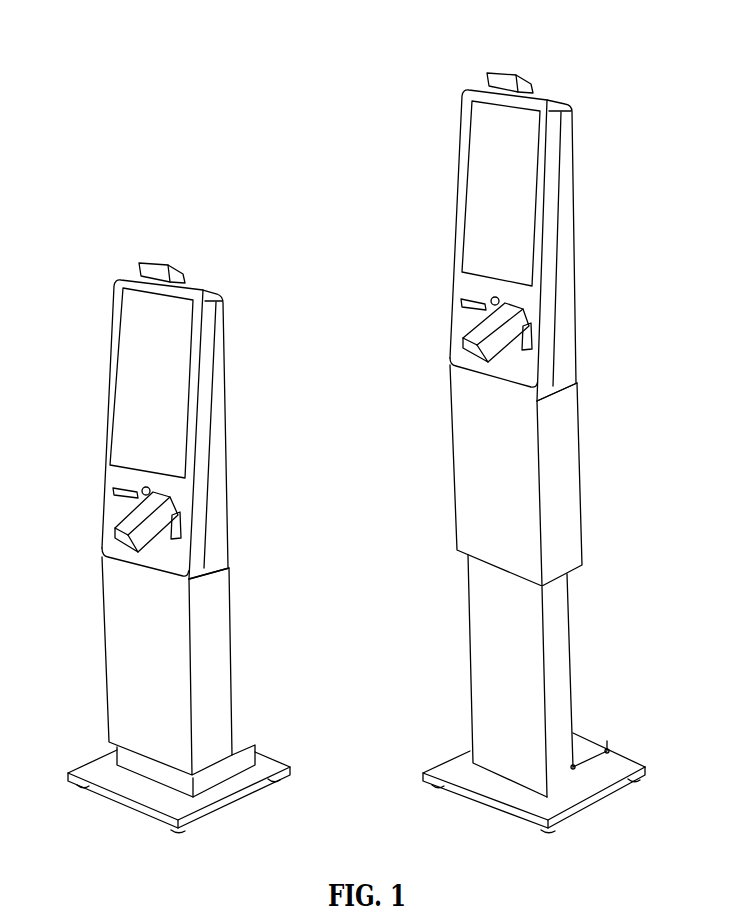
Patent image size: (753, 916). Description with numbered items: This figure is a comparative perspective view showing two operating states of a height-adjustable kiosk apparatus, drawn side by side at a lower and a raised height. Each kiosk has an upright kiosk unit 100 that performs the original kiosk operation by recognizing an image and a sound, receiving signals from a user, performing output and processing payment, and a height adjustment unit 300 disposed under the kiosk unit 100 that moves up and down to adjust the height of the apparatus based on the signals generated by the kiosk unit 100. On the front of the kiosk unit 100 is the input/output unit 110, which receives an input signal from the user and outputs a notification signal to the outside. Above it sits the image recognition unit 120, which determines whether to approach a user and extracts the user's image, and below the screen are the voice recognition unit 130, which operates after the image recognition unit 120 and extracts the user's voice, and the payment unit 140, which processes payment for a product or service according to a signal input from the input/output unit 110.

The kiosk unit 100 is at (238, 360).
The input/output unit 110 is at (173, 333).
The image recognition unit 120 is at (157, 264).
The voice recognition unit 130 is at (147, 489).
The payment unit 140 is at (153, 527).
The height adjustment unit 300 is at (238, 360).